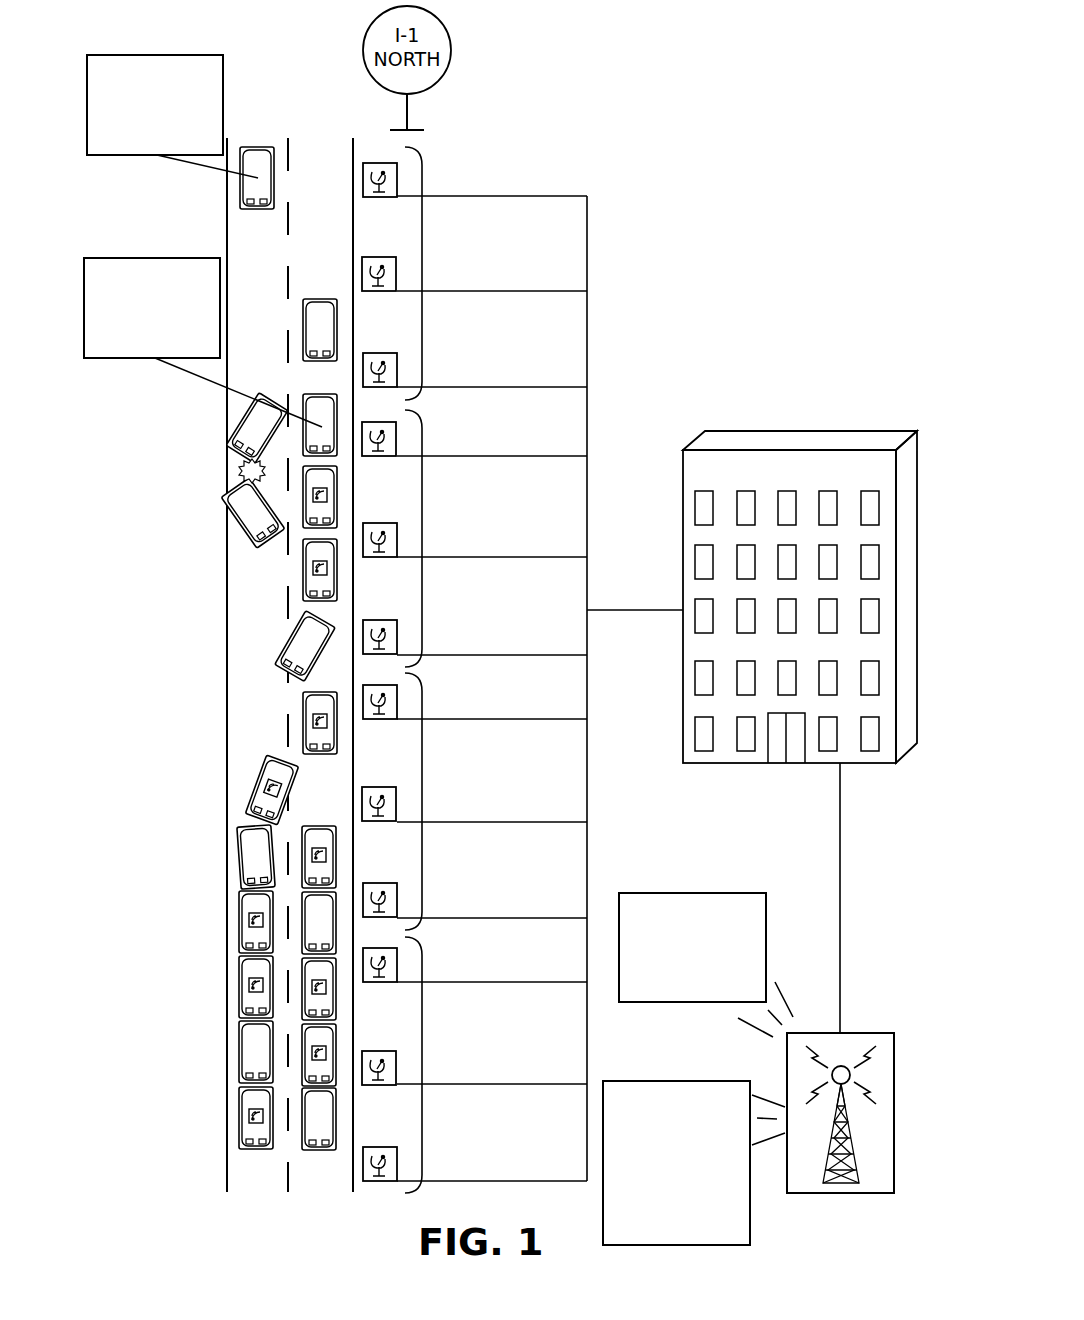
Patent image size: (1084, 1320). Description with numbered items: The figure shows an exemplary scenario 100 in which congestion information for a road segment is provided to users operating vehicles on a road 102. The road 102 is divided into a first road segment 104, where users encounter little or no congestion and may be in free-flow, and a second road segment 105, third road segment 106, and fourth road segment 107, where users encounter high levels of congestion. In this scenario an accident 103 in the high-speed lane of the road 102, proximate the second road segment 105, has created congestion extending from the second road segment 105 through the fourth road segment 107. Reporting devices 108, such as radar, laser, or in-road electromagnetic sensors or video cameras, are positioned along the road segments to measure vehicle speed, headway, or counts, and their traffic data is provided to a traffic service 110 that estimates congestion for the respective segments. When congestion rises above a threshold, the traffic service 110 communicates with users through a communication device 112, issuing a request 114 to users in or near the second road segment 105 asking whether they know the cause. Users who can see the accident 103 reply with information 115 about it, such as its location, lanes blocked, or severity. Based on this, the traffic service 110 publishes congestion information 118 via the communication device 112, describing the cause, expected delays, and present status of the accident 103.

The exemplary scenario 100 is at (754, 36).
The road 102 is at (292, 98).
The accident 103 is at (208, 441).
The first road segment 104 is at (422, 232).
The second road segment 105 is at (422, 502).
The third road segment 106 is at (422, 758).
The fourth road segment 107 is at (422, 1022).
The reporting devices 108 is at (397, 179).
The traffic service 110 is at (799, 431).
The communication device 112 is at (853, 1033).
The request 114 is at (693, 893).
The information 115 is at (157, 55).
The congestion information 118 is at (677, 1081).